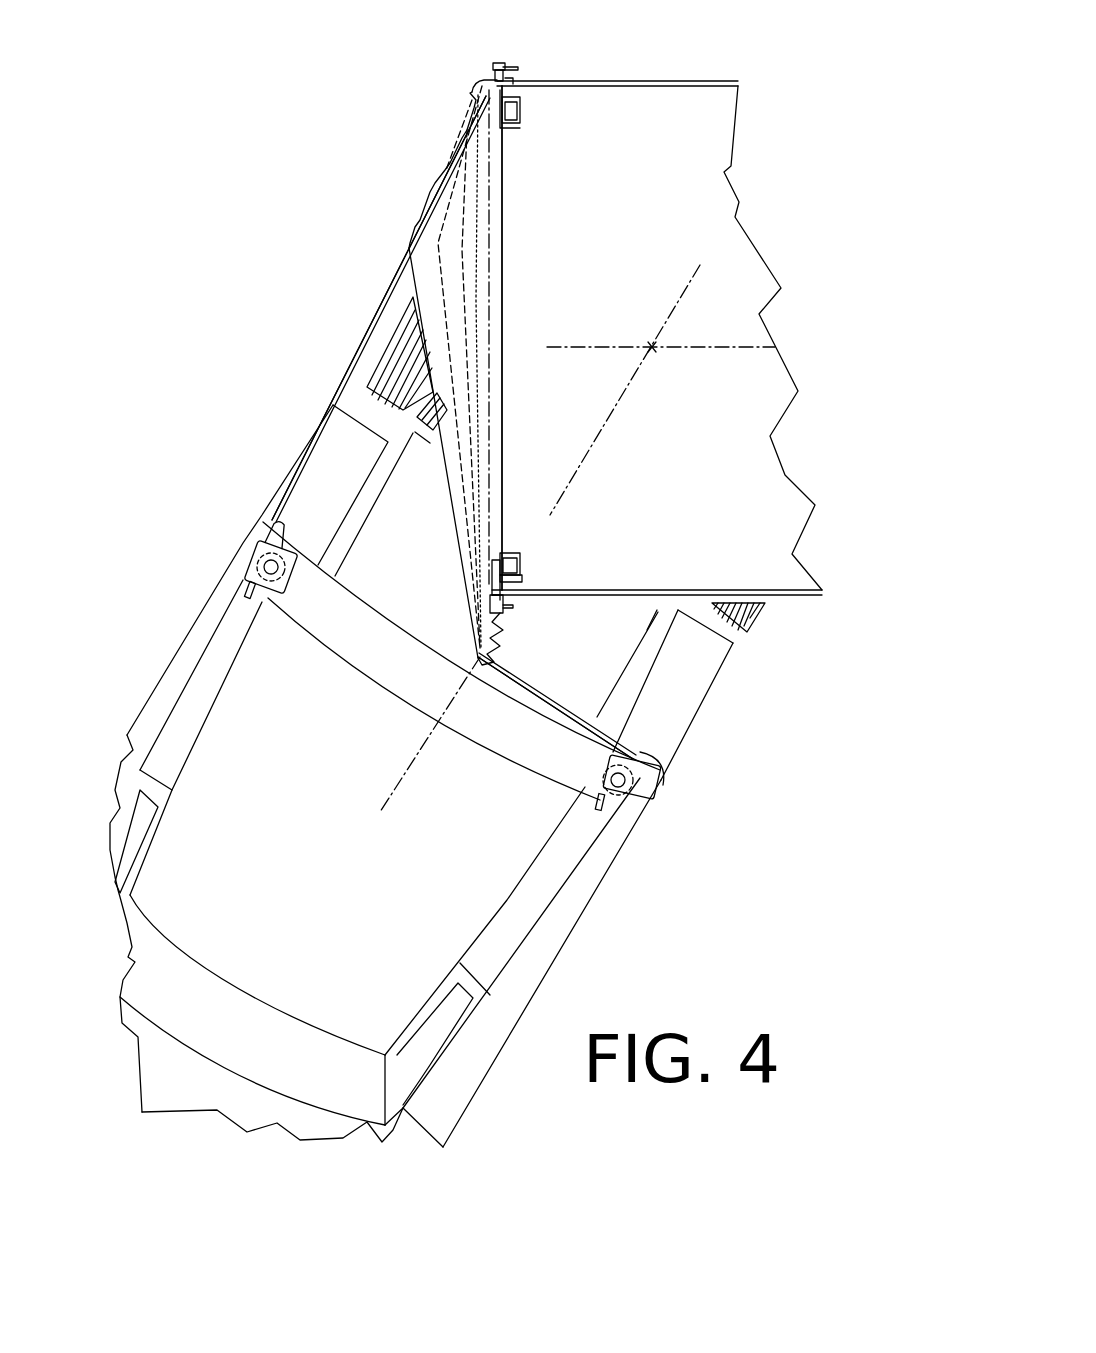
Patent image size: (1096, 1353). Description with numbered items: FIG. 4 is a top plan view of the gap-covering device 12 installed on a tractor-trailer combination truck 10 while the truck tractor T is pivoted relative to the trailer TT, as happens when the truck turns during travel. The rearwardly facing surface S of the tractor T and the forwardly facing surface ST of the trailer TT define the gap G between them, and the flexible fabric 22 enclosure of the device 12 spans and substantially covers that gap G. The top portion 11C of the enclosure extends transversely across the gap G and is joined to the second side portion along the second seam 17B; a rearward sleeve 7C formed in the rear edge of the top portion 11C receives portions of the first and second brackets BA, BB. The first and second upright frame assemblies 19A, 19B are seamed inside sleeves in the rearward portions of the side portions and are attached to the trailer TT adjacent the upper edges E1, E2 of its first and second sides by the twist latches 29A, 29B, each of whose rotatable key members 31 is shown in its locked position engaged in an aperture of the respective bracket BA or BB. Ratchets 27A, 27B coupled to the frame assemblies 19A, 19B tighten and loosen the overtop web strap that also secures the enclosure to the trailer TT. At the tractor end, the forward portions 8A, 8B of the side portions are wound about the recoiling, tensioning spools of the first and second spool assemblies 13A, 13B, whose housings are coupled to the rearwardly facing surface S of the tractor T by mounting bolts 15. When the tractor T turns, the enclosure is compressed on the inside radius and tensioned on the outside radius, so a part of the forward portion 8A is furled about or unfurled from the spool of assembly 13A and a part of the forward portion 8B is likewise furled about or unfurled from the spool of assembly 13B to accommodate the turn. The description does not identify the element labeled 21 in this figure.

The tractor-trailer combination truck 10 is at (437, 722).
The device 12 is at (458, 528).
The first spool assembly 13A is at (660, 795).
The second spool assembly 13B is at (255, 552).
The mounting bolts 15 is at (250, 585).
The second seam 17B is at (460, 372).
The first upright frame assembly 19A is at (510, 617).
The second upright frame assembly 19B is at (495, 66).
The fold lines 21 is at (463, 175).
The fabric 22 is at (362, 370).
The first ratchet 27A is at (508, 605).
The second ratchet 27B is at (513, 78).
The first twist latch 29A is at (520, 578).
The second twist latch 29B is at (520, 125).
The rotatable key member 31 is at (520, 105).
The rearward sleeve 7C is at (490, 400).
The forward portion of the first side portion 8A is at (590, 697).
The forward portion of the second side portion 8B is at (340, 378).
The top portion 11C is at (490, 300).
The first bracket BA is at (515, 565).
The second bracket BB is at (510, 130).
The forwardly facing surface ST is at (470, 236).
The trailer TT is at (670, 317).
The upper edge of the first side portion of the trailer E1 is at (782, 590).
The upper edge of the second side portion of the trailer E2 is at (708, 84).
The gap G is at (263, 443).
The rearwardly facing surface S is at (308, 620).
The truck tractor T is at (605, 875).